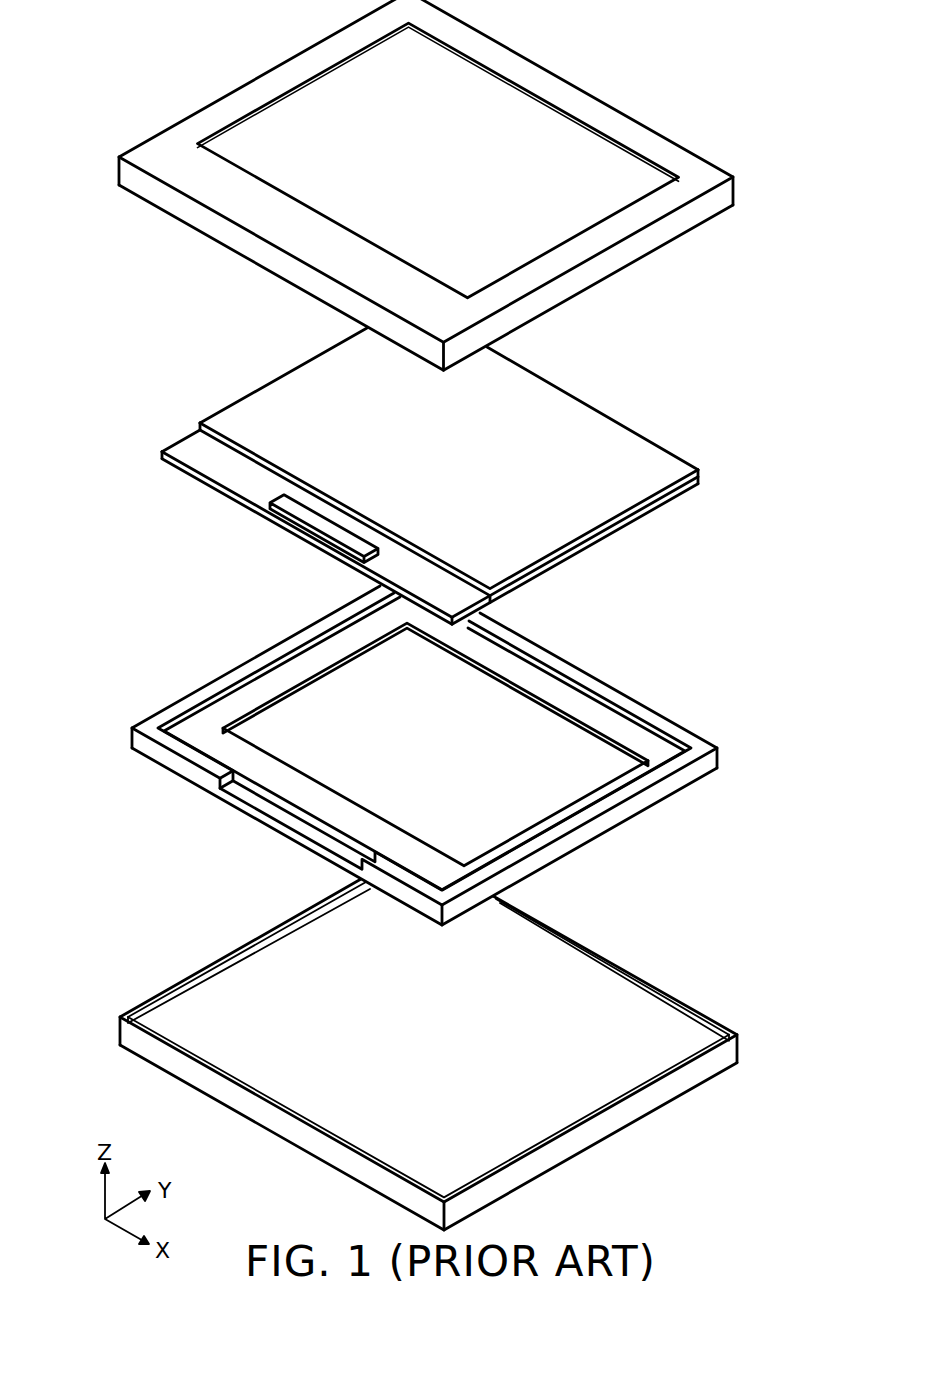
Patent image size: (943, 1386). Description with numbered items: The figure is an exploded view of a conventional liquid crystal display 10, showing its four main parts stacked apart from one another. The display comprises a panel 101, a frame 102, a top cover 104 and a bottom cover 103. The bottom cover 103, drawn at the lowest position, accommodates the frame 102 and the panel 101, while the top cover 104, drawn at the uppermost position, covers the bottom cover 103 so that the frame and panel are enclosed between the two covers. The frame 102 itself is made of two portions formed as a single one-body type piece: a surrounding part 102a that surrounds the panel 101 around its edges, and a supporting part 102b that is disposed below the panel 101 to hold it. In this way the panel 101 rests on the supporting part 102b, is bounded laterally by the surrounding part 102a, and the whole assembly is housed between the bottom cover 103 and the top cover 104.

The liquid crystal display 10 is at (196, 24).
The panel 101 is at (677, 470).
The frame 102 is at (490, 748).
The surrounding part 102a is at (708, 750).
The supporting part 102b is at (655, 743).
The bottom cover 103 is at (677, 1043).
The top cover 104 is at (710, 173).